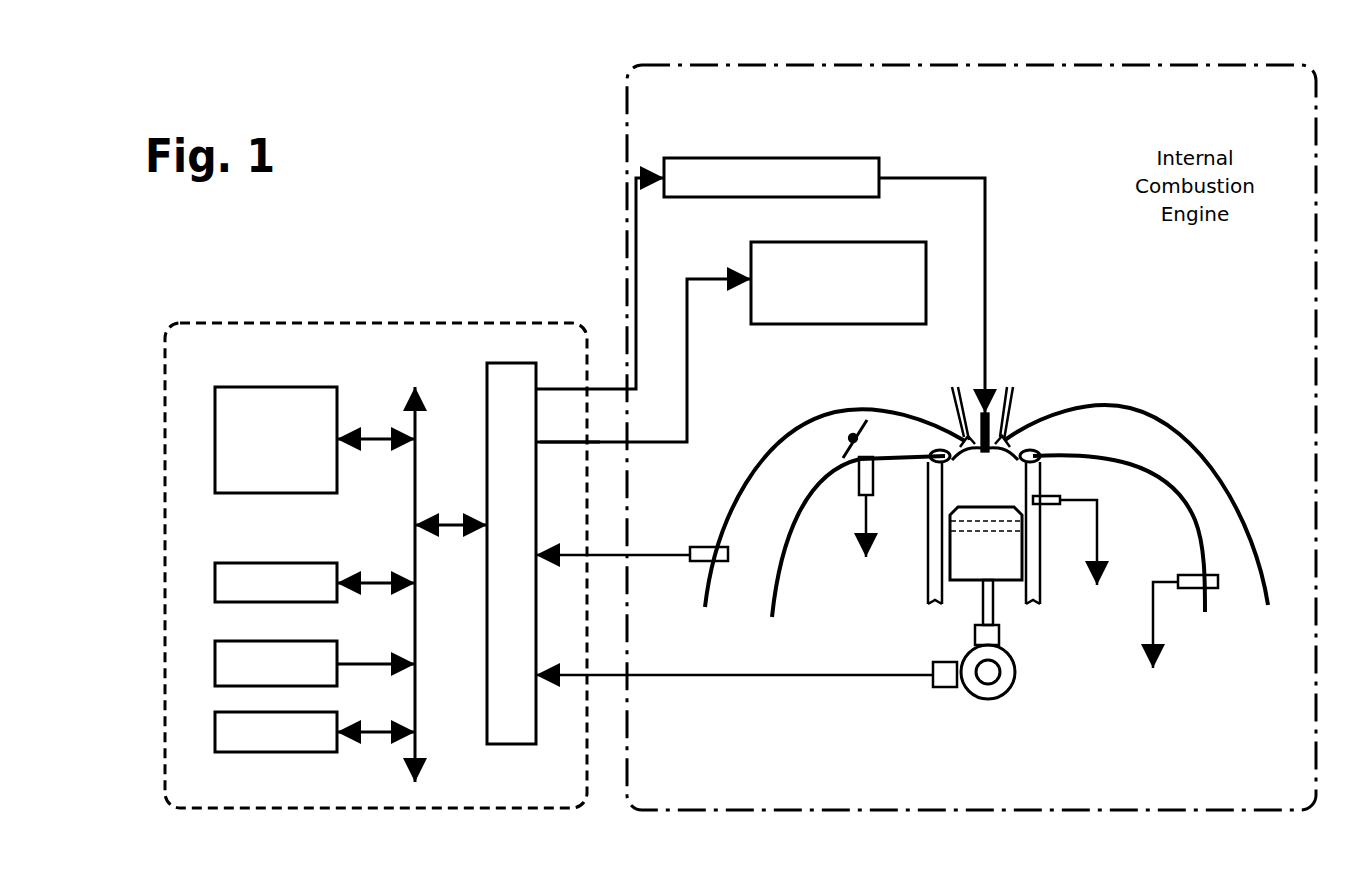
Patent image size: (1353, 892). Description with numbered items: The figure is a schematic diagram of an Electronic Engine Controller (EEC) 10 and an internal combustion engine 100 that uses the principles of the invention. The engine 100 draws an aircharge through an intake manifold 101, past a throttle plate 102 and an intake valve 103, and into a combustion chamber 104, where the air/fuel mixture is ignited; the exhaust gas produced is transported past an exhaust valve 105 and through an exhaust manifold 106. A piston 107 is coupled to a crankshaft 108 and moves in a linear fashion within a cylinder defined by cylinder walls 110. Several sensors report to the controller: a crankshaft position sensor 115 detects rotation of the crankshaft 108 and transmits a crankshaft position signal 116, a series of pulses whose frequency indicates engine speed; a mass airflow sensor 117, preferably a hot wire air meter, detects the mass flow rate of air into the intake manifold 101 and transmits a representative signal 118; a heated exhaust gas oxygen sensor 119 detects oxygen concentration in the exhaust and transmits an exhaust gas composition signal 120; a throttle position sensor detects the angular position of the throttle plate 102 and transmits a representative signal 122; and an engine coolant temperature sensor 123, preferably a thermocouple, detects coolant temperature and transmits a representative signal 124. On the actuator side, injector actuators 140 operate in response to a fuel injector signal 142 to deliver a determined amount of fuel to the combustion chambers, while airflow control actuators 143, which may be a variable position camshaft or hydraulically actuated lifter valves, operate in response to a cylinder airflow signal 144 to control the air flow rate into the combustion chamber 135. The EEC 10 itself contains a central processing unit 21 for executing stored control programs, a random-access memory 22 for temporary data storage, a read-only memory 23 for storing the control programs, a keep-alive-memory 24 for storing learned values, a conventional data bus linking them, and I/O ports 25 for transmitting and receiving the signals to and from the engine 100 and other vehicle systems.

The electronic engine controller 10 is at (442, 808).
The central processing unit 21 is at (203, 413).
The random-access memory 22 is at (203, 587).
The read-only memory 23 is at (203, 659).
The keep-alive-memory 24 is at (203, 737).
The I/O ports 25 is at (475, 395).
The internal combustion engine 100 is at (622, 116).
The intake manifold 101 is at (835, 513).
The throttle plate 102 is at (847, 420).
The intake valve 103 is at (948, 400).
The combustion chamber 104 is at (850, 478).
The exhaust valve 105 is at (1022, 405).
The exhaust manifold 106 is at (1136, 508).
The piston 107 is at (958, 588).
The crankshaft 108 is at (1015, 665).
The cylinder walls 110 is at (1012, 590).
The crankshaft position sensor 115 is at (945, 658).
The crankshaft position signal 116 is at (905, 675).
The mass airflow sensor 117 is at (740, 560).
The mass airflow signal 118 is at (700, 545).
The heated exhaust gas oxygen sensor 119 is at (1225, 578).
The exhaust gas composition signal 120 is at (1148, 582).
The throttle position signal 122 is at (875, 520).
The engine coolant temperature sensor 123 is at (1060, 512).
The engine coolant temperature signal 124 is at (1112, 500).
The combustion chamber 135 is at (986, 523).
The injector actuators 140 is at (745, 158).
The fuel injector signal 142 is at (645, 275).
The airflow control actuators 143 is at (930, 242).
The cylinder airflow signal 144 is at (698, 385).